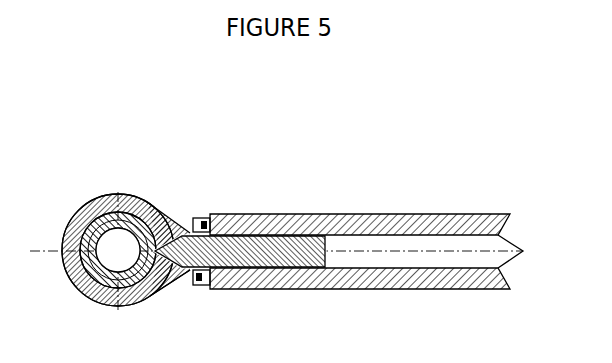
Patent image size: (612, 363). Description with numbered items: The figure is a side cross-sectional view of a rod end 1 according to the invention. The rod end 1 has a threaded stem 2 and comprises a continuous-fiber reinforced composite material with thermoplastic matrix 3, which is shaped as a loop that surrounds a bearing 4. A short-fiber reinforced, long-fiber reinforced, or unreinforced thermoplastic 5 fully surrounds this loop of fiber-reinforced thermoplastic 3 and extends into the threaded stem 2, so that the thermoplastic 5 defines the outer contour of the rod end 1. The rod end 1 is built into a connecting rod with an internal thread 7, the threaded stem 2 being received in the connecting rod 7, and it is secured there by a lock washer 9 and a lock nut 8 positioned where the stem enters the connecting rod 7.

The rod end 1 is at (121, 196).
The threaded stem 2 is at (188, 234).
The continuous-fiber reinforced composite material with thermoplastic matrix 3 is at (80, 211).
The bearing 4 is at (83, 278).
The short-fiber reinforced, long-fiber reinforced, or unreinforced thermoplastic 5 is at (166, 291).
The connecting rod with an internal thread 7 is at (303, 214).
The lock nut 8 is at (197, 286).
The lock washer 9 is at (210, 218).